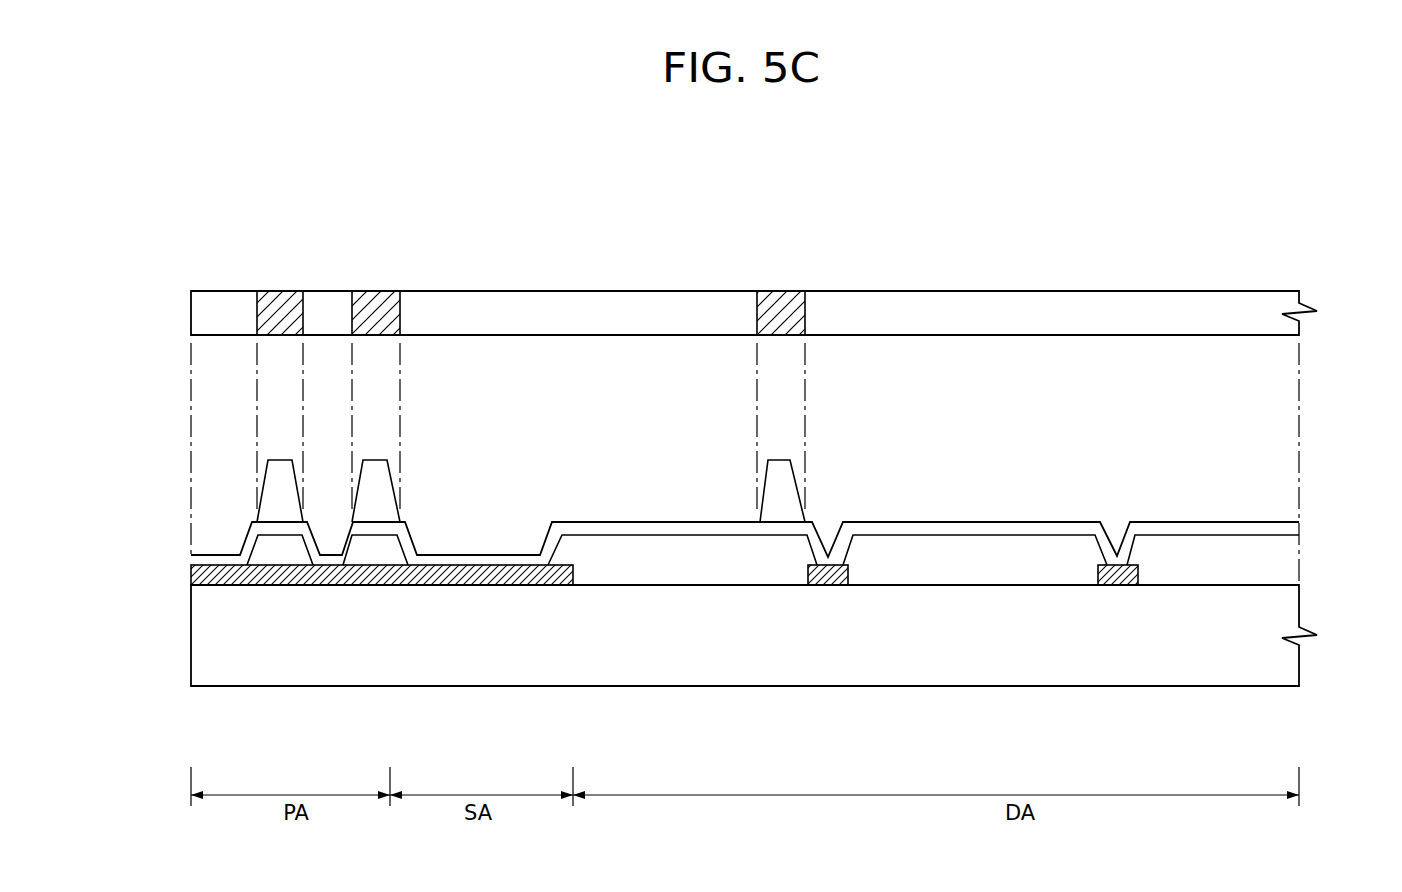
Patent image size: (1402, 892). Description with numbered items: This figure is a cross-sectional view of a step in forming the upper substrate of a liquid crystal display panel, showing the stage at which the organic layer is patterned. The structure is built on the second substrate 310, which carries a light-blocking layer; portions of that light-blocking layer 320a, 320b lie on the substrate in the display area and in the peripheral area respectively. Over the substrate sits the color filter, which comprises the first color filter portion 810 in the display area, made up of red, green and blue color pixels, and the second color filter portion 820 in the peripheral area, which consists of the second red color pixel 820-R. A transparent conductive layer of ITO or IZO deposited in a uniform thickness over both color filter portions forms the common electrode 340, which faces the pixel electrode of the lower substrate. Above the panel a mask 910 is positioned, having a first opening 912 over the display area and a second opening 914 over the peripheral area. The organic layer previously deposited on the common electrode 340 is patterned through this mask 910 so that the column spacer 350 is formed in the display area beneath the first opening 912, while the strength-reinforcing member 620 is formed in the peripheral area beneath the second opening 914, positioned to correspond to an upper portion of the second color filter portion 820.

The second substrate 310 is at (195, 615).
The light-blocking layer portion 320a is at (823, 585).
The light-blocking layer portion 320b is at (195, 575).
The common electrode 340 is at (1297, 524).
The column spacer 350 is at (793, 488).
The strength-reinforcing member 620 is at (268, 493).
The first color filter portion 810 is at (1306, 563).
The second color filter portion 820 is at (242, 550).
The second red color pixel 820-R is at (262, 547).
The mask 910 is at (196, 317).
The first opening 912 is at (782, 291).
The second opening 914 is at (272, 291).